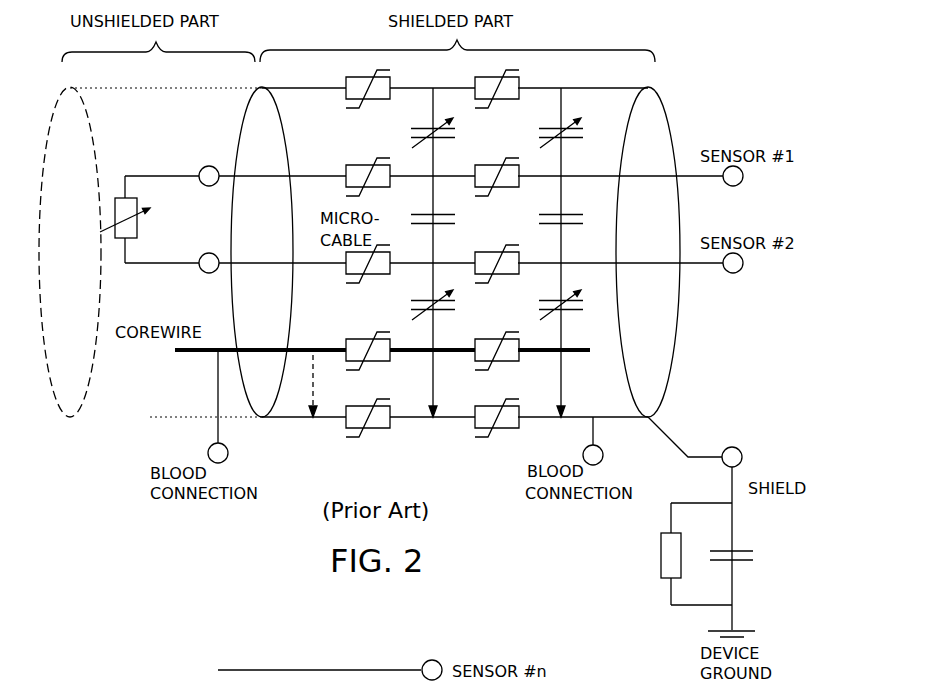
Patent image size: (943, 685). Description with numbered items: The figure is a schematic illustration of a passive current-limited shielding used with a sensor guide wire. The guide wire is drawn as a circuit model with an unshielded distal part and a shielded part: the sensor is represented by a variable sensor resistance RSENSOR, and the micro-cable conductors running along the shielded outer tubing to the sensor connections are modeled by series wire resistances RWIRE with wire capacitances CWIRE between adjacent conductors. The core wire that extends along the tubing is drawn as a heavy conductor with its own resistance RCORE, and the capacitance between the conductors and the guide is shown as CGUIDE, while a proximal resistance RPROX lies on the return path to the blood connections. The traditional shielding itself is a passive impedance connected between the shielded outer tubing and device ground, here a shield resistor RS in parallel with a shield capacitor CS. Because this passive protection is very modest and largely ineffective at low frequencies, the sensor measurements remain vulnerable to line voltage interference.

The sensor resistance RSENSOR is at (153, 219).
The wire resistance RWIRE is at (416, 176).
The wire capacitance CWIRE is at (497, 252).
The guide capacitance CGUIDE is at (466, 305).
The corewire resistance RCORE is at (407, 370).
The proximal resistance RPROX is at (432, 434).
The shield resistor 100 kOhm RS is at (615, 555).
The shield capacitor 3.3 nF CS is at (772, 546).